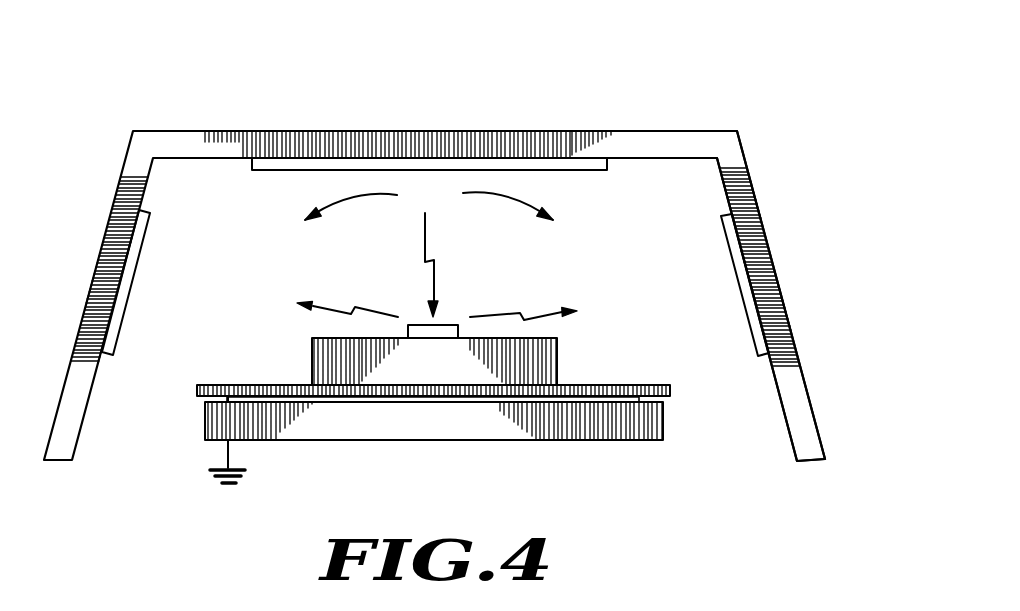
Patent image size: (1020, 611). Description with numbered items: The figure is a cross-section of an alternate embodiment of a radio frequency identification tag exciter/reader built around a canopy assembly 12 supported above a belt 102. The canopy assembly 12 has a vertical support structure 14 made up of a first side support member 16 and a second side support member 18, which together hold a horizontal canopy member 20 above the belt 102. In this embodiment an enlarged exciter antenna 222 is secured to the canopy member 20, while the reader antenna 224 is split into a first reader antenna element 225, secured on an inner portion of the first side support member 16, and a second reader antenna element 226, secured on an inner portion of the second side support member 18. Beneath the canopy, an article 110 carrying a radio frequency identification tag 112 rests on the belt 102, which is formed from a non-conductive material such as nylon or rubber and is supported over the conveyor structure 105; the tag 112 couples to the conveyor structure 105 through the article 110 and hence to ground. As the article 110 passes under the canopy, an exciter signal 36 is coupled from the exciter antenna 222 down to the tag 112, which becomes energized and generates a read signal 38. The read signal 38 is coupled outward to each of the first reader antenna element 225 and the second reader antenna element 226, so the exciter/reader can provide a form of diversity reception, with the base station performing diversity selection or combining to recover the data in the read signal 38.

The canopy assembly 12 is at (674, 118).
The vertical support structure 14 is at (815, 327).
The first side support member 16 is at (758, 250).
The second side support member 18 is at (103, 268).
The horizontal canopy member 20 is at (446, 135).
The exciter signal 36 is at (425, 238).
The read signal 38 is at (375, 293).
The belt 102 is at (263, 385).
The conveyor structure 105 is at (643, 428).
The article 110 is at (540, 363).
The radio frequency identification tag 112 is at (450, 323).
The enlarged exciter antenna 222 is at (573, 170).
The reader antenna 224 is at (429, 199).
The first reader antenna element 225 is at (733, 282).
The second reader antenna element 226 is at (133, 284).